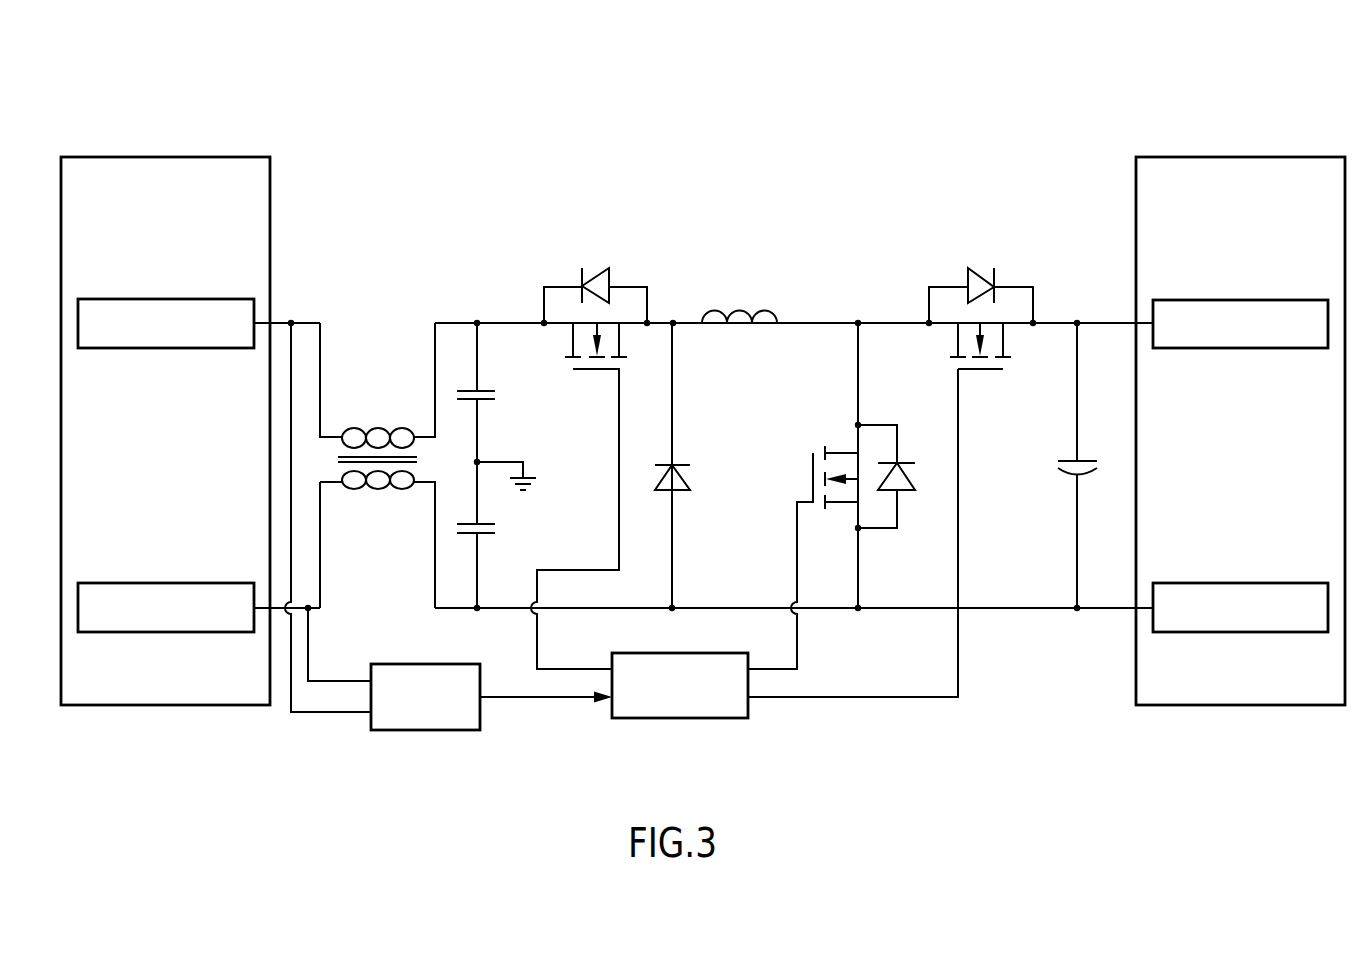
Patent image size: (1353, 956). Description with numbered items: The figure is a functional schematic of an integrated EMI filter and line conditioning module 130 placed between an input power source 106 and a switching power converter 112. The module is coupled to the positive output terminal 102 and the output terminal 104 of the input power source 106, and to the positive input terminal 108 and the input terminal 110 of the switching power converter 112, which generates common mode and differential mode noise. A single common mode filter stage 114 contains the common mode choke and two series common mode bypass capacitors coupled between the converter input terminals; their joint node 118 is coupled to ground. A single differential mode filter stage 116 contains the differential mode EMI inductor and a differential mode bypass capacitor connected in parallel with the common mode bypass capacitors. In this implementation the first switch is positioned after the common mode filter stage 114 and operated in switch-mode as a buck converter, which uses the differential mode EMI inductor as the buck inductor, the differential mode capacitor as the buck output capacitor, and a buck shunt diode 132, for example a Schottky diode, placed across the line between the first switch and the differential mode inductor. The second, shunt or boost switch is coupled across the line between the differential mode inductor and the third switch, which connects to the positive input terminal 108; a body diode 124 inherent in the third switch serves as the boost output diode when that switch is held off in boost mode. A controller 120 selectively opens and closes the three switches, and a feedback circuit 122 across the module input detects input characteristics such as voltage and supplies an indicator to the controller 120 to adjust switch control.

The positive output terminal 102 is at (143, 349).
The output terminal 104 is at (143, 632).
The input power source 106 is at (150, 157).
The positive input terminal 108 is at (1250, 349).
The input terminal 110 is at (1250, 632).
The switching power converter 112 is at (1222, 157).
The common mode filter stage 114 is at (413, 217).
The differential mode filter stage 116 is at (926, 217).
The joint node 118 is at (480, 431).
The controller 120 is at (685, 719).
The feedback circuit 122 is at (435, 731).
The body diode 124 is at (966, 276).
The EMI-LC module 130 is at (846, 64).
The buck shunt diode 132 is at (688, 482).